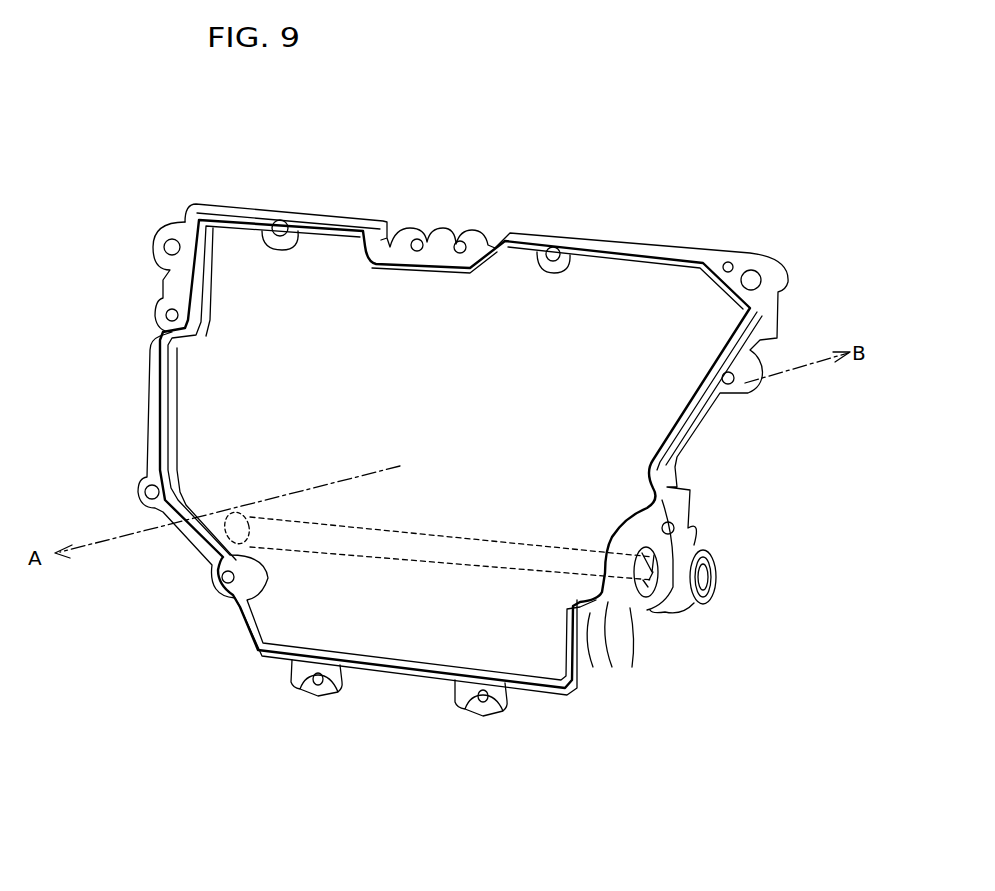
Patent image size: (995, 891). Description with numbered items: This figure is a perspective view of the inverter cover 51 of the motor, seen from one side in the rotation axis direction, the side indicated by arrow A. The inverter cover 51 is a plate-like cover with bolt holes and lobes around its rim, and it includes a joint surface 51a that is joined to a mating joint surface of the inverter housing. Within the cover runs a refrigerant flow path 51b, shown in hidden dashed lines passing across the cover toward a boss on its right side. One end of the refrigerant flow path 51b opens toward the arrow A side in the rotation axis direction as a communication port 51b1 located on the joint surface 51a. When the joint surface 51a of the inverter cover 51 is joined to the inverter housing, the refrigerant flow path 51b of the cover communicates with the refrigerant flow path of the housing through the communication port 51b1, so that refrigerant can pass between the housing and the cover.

The inverter cover 51 is at (749, 251).
The joint surface 51a is at (662, 620).
The refrigerant flow path 51b is at (400, 520).
The communication port 51b1 is at (643, 582).